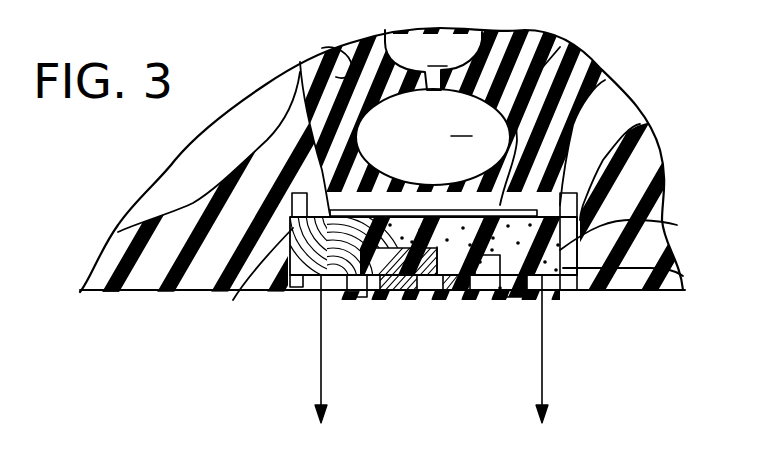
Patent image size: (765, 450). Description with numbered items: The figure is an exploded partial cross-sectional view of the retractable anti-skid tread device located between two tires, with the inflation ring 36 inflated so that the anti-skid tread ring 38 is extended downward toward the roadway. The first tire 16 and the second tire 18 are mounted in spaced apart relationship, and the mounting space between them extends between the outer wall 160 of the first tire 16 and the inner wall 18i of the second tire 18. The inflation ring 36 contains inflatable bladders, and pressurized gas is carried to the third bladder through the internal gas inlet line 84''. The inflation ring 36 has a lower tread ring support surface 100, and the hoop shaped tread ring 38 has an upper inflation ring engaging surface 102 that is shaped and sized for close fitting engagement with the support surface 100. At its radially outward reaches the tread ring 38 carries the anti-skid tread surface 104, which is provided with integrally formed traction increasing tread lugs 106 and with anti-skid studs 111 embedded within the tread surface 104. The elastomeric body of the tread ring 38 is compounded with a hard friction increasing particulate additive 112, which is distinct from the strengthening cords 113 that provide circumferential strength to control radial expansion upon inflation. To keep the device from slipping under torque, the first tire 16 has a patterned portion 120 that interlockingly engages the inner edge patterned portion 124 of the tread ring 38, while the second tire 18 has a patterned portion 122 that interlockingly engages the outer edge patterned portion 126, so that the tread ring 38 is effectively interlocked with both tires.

The second tire 18 is at (178, 212).
The inner wall of the second tire 18i is at (322, 48).
The outer wall of first tire 160 is at (560, 47).
The inflation ring 36 is at (605, 80).
The strengthening cords 113 is at (640, 124).
The first tire 16 is at (633, 195).
The friction increasing particulate additive 112 is at (677, 225).
The inner edge patterned portion 124 is at (683, 276).
The patterned portion of first tire 120 is at (567, 290).
The inflation ring engaging surface 102 is at (470, 282).
The anti-skid studs 111 is at (357, 297).
The tread lugs 106 is at (457, 282).
The anti-skid tread ring 38 is at (333, 276).
The anti-skid tread surface 104 is at (309, 278).
The patterned portion of second tire 122 is at (283, 280).
The outer edge patterned portion 126 is at (290, 250).
The tread ring support surface 100 is at (500, 180).
The internal gas inlet line 84'' is at (401, 113).